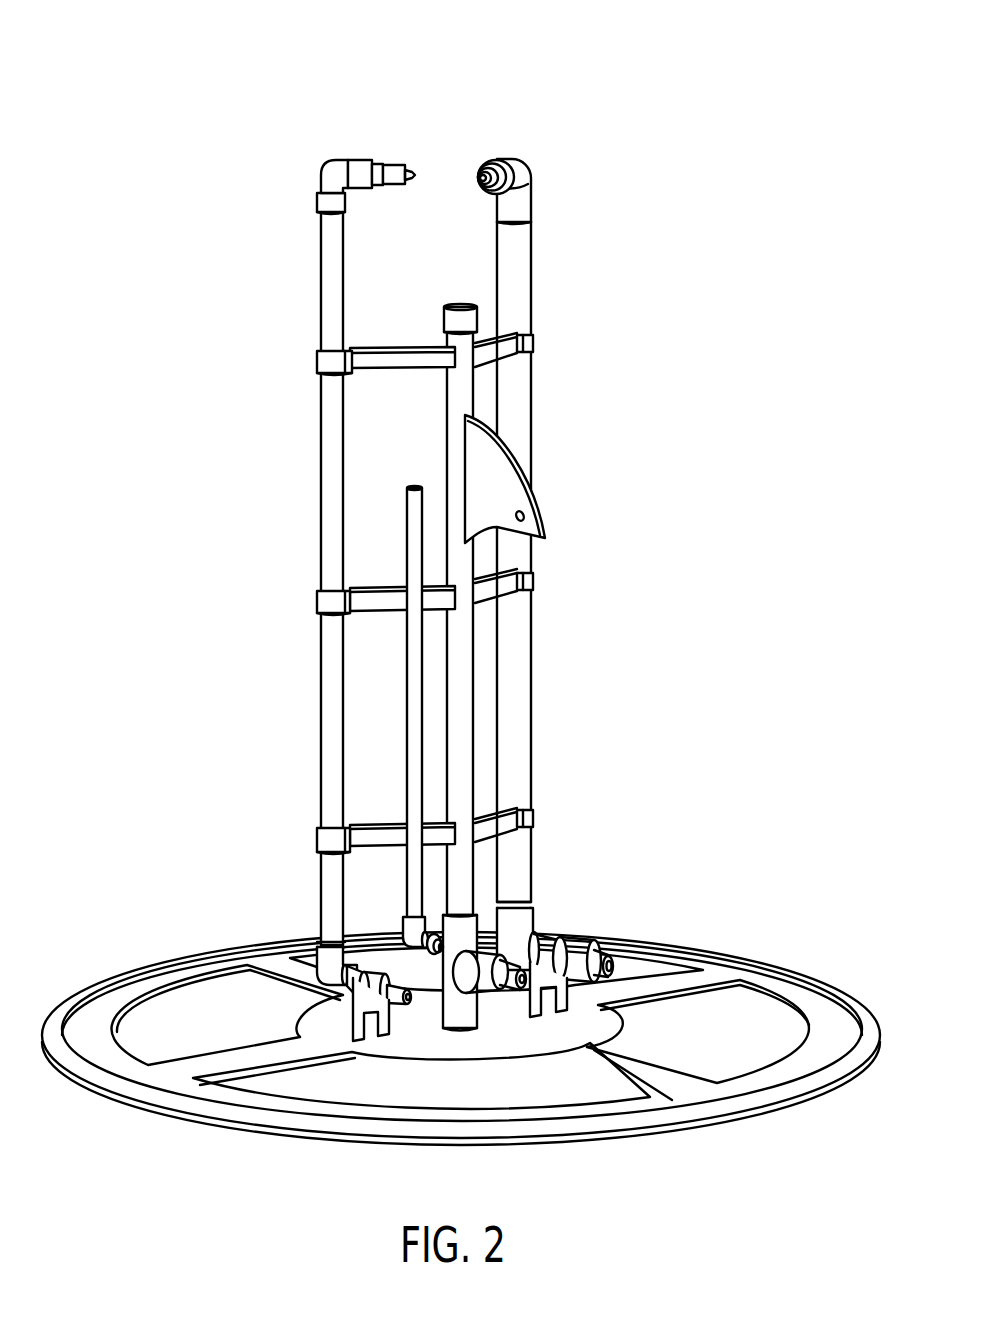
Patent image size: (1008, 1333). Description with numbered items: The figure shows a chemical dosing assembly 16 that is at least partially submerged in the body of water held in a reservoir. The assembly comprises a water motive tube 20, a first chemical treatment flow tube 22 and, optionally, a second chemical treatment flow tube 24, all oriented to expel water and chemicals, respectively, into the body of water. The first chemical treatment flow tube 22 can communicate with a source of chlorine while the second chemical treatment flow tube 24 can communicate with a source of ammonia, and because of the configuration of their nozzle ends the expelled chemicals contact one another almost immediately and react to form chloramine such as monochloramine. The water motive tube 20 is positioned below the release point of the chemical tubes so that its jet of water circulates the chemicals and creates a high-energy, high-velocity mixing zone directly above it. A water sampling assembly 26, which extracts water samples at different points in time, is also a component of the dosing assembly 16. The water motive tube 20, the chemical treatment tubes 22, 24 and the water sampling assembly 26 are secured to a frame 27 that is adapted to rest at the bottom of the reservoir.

The chemical dosing assembly 16 is at (423, 520).
The water motive tube 20 is at (467, 318).
The first chemical treatment flow tube 22 is at (361, 158).
The second chemical treatment flow tube 24 is at (530, 157).
The water sampling assembly 26 is at (413, 653).
The frame 27 is at (717, 970).